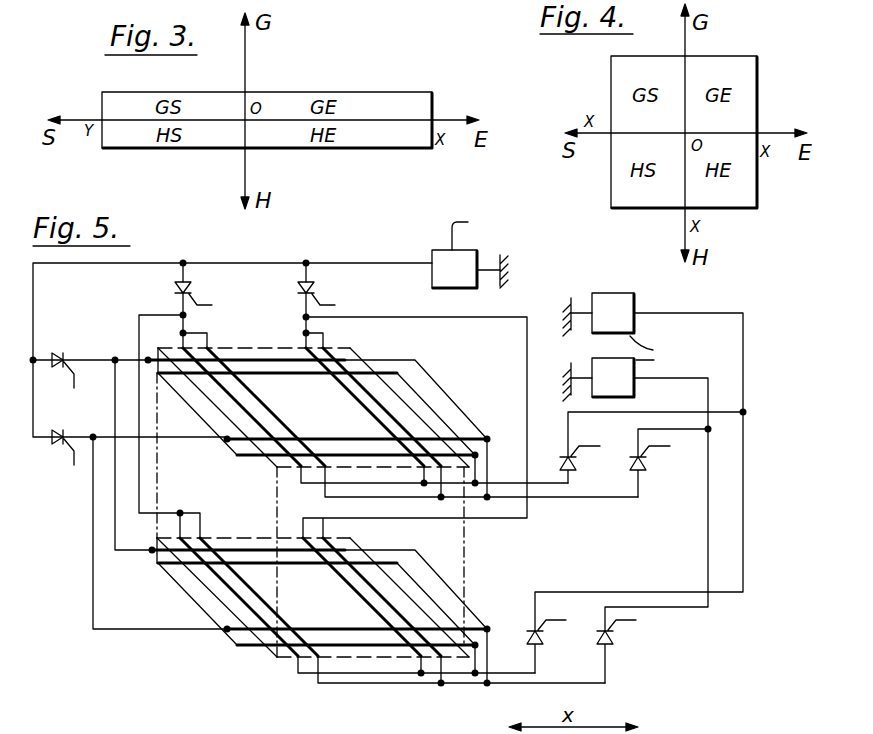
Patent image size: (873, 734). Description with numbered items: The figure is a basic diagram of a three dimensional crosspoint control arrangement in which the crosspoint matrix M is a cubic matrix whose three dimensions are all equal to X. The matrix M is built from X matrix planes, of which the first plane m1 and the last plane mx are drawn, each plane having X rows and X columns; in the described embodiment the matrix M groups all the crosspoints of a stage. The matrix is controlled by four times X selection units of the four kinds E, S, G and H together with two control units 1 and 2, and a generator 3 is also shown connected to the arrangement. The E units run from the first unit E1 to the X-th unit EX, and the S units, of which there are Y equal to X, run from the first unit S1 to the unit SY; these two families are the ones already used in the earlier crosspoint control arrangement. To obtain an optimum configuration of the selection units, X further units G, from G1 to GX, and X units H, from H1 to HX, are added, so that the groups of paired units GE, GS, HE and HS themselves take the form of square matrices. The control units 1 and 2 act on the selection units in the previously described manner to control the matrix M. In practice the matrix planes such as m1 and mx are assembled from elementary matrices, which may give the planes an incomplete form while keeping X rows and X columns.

The control unit 1 is at (634, 328).
The control unit 2 is at (634, 385).
The generator 3 is at (465, 291).
The selection unit S S1 is at (198, 290).
The selection unit S SY is at (326, 292).
The selection unit E E1 is at (58, 372).
The selection unit E EX is at (54, 451).
The selection unit H H1 is at (585, 464).
The selection unit G G1 is at (657, 471).
The selection unit H HX is at (551, 646).
The selection unit G GX is at (626, 651).
The matrix plane m1 is at (393, 422).
The matrix plane mx is at (378, 610).
The crosspoint matrix M is at (466, 545).